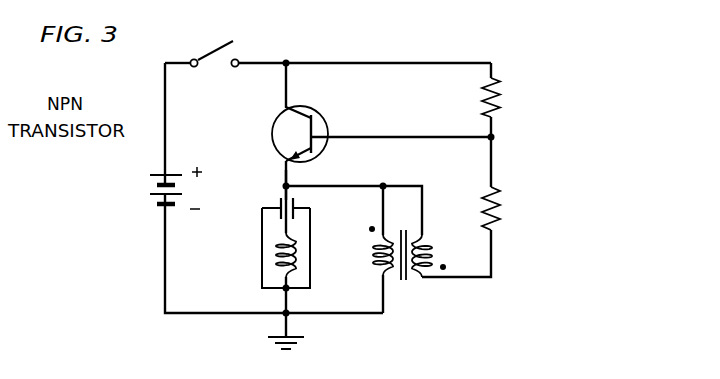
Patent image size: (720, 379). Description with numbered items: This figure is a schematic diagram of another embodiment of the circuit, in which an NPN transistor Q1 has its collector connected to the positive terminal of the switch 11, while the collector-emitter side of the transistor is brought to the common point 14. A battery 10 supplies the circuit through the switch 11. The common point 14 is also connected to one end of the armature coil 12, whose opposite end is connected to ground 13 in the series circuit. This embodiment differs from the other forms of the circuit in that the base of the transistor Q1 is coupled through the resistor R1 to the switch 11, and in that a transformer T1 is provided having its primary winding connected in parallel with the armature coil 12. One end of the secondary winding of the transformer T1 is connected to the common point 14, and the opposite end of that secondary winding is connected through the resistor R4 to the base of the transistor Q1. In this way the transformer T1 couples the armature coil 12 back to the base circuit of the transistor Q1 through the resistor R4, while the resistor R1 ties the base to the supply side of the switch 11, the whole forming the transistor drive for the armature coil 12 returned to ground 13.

The battery 10 is at (145, 187).
The switch 11 is at (209, 52).
The coil (inductor with capacitor) 12 is at (276, 254).
The ground 13 is at (277, 320).
The common point 14 is at (283, 185).
The NPN transistor Q1 is at (286, 134).
The resistor R1 is at (508, 97).
The resistor R4 is at (508, 208).
The transformer T1 is at (407, 267).